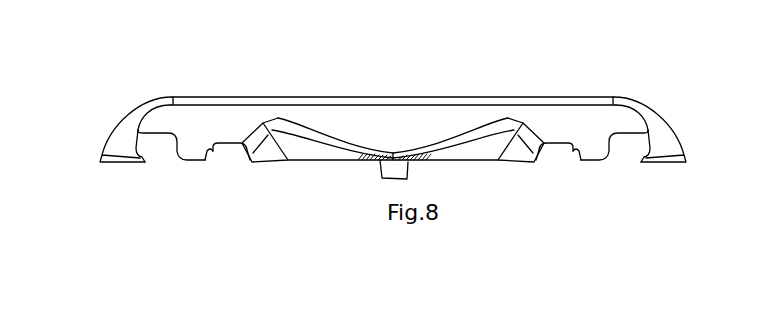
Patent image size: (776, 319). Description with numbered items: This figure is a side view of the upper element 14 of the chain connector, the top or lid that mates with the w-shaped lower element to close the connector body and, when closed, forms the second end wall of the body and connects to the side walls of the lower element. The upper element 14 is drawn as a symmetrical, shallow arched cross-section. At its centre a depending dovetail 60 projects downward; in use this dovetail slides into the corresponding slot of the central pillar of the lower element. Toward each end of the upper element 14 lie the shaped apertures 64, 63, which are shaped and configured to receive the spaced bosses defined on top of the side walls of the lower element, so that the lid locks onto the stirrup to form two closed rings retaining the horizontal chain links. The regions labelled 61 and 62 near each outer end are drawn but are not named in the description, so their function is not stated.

The upper element 14 is at (678, 116).
The depending dovetail 60 is at (381, 188).
The flange 61 is at (187, 155).
The outer rim wall 62 is at (121, 156).
The shaped aperture 63 is at (208, 170).
The shaped aperture 64 is at (146, 173).